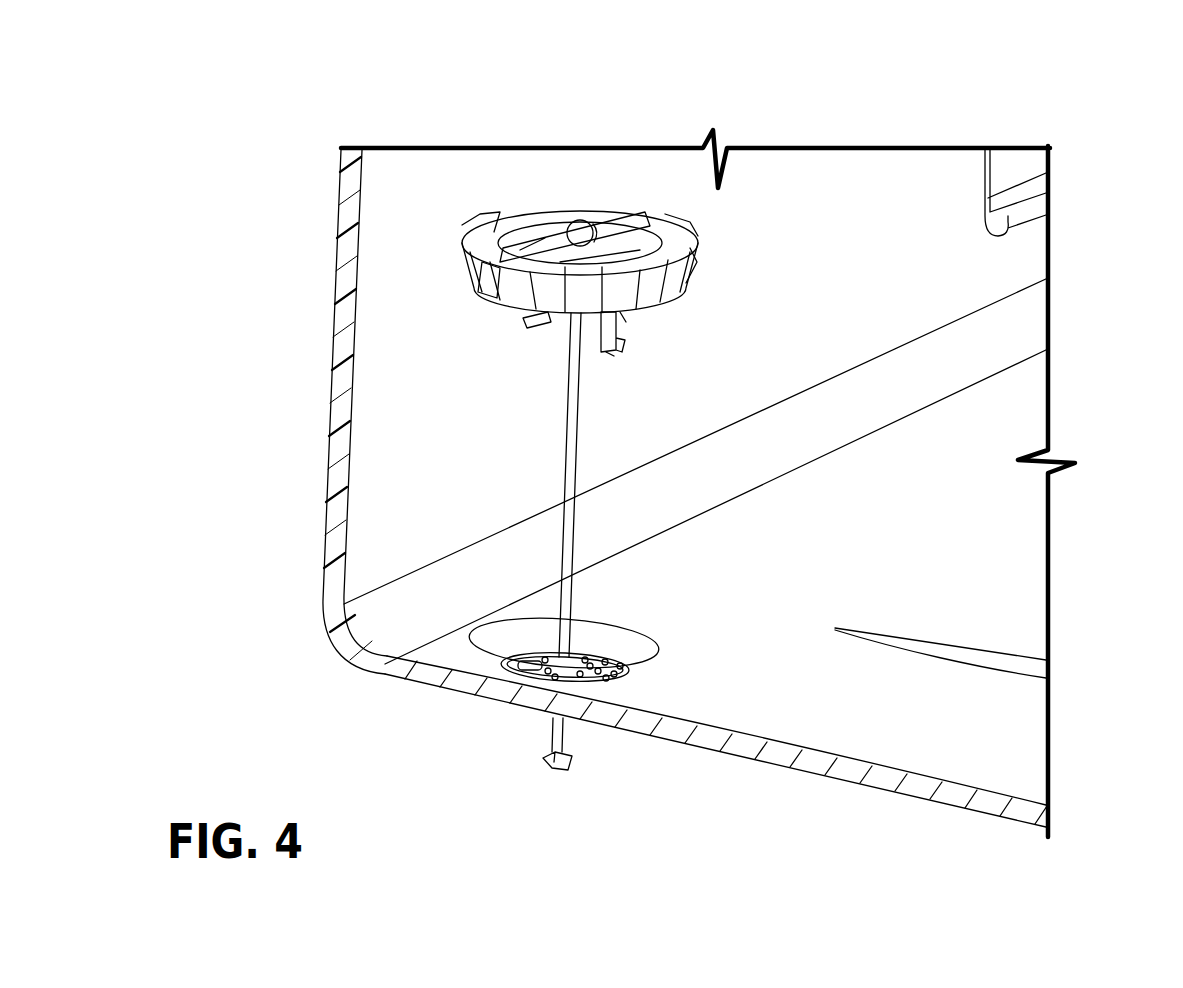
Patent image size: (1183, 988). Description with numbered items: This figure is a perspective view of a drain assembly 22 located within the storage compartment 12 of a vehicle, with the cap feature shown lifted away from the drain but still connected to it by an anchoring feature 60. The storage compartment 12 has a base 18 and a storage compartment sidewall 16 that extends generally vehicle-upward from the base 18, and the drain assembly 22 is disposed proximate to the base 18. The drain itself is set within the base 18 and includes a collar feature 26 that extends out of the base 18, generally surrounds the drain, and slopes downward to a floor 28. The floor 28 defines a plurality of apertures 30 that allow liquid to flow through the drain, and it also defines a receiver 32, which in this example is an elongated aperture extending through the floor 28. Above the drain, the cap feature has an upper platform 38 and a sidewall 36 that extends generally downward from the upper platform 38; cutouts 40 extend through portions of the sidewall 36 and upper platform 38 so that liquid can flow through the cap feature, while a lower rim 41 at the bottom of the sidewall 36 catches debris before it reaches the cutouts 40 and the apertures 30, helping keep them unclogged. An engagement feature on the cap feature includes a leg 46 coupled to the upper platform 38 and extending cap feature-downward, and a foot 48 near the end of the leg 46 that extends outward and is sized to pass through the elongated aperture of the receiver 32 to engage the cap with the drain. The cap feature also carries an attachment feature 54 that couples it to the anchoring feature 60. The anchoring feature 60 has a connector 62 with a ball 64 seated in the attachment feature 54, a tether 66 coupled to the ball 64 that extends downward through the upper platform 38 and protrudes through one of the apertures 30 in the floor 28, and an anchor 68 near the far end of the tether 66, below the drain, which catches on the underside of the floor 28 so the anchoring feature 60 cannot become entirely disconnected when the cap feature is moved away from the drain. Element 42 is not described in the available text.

The storage compartment 12 is at (1060, 255).
The storage compartment sidewall 16 is at (908, 230).
The base 18 is at (732, 653).
The drain assembly 22 is at (487, 200).
The collar feature 26 is at (437, 653).
The floor 28 is at (535, 672).
The apertures 30 is at (598, 678).
The receiver 32 is at (513, 668).
The sidewall 36 is at (700, 262).
The upper platform 38 is at (677, 233).
The cutout 40 is at (677, 300).
The lower rim 41 is at (530, 305).
The block 42 is at (497, 292).
The leg 46 is at (618, 337).
The foot 48 is at (613, 360).
The attachment feature 54 is at (555, 230).
The anchoring feature 60 is at (563, 428).
The connector 62 is at (593, 220).
The ball 64 is at (577, 230).
The tether 66 is at (567, 483).
The anchor 68 is at (571, 758).